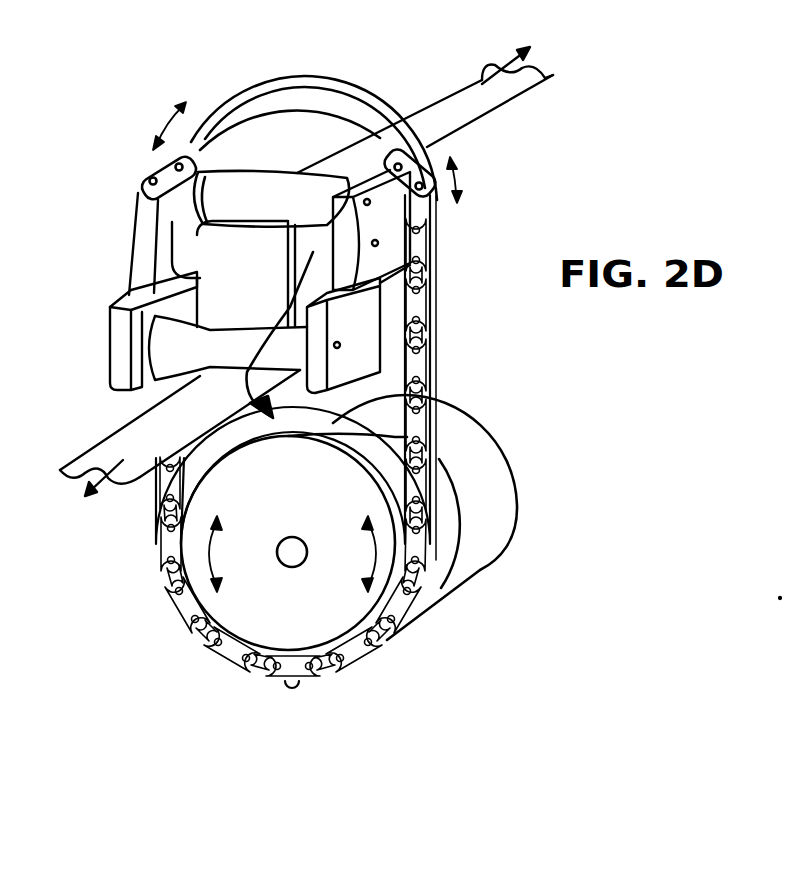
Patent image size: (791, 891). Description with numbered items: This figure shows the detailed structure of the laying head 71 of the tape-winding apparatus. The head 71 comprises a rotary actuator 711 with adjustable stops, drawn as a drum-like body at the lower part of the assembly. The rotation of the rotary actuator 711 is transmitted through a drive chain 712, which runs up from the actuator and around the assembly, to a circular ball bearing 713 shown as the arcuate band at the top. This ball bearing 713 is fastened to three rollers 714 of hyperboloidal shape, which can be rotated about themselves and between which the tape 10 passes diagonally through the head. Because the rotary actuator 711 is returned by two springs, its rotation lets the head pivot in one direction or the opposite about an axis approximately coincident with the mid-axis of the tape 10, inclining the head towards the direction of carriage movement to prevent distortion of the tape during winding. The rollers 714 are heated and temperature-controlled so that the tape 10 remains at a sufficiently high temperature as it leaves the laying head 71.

The tape 10 is at (131, 422).
The laying head 71 is at (365, 451).
The rotary actuator 711 is at (487, 532).
The drive chain 712 is at (438, 360).
The circular ball bearing 713 is at (328, 80).
The rollers 714 is at (267, 207).